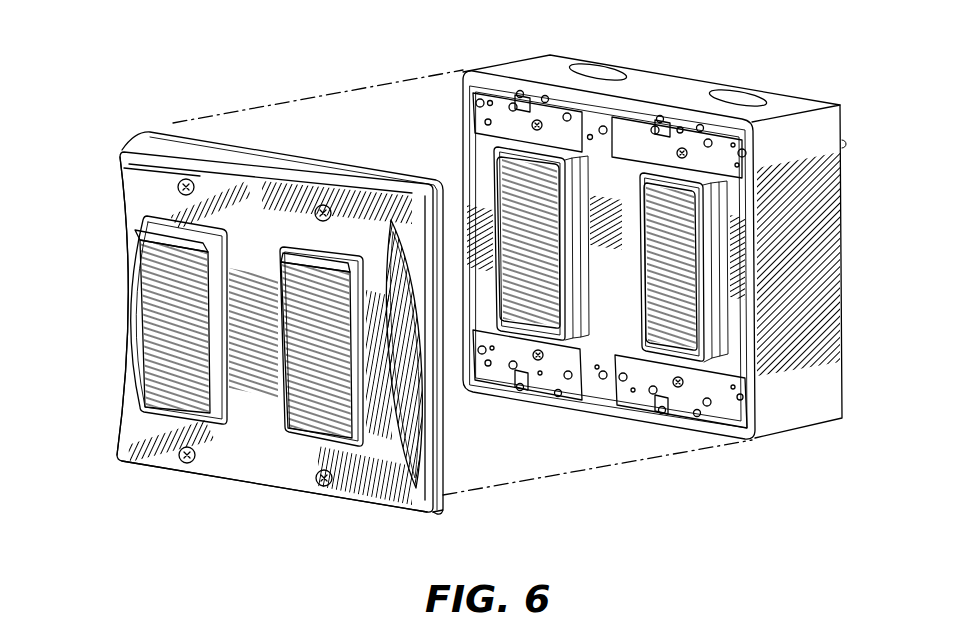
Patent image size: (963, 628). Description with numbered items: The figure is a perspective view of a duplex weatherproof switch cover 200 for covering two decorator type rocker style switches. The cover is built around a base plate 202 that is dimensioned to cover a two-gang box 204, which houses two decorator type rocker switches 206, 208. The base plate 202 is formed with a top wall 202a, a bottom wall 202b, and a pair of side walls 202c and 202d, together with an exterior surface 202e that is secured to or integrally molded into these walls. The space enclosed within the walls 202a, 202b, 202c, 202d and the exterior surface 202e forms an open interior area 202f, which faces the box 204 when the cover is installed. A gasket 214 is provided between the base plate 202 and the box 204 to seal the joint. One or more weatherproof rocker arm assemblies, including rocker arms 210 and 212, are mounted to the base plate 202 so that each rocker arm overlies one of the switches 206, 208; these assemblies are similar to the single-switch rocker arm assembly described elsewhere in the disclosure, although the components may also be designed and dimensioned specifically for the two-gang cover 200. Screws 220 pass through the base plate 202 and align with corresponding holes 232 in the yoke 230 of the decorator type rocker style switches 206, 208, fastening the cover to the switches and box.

The duplex weatherproof switch cover 200 is at (81, 171).
The base plate 202 is at (130, 152).
The top wall 202a is at (243, 160).
The bottom wall 202b is at (387, 512).
The side wall 202c is at (417, 495).
The side wall 202d is at (117, 443).
The exterior surface 202e is at (147, 188).
The open interior area 202f is at (416, 167).
The 2 gang box 204 is at (823, 107).
The decorator type rocker switch 206 is at (533, 190).
The decorator type rocker switch 208 is at (687, 300).
The rocker arm 210 is at (163, 340).
The rocker arm 212 is at (307, 412).
The gasket 214 is at (442, 522).
The screws 220 is at (186, 179).
The yoke 230 is at (567, 400).
The holes 232 is at (523, 110).